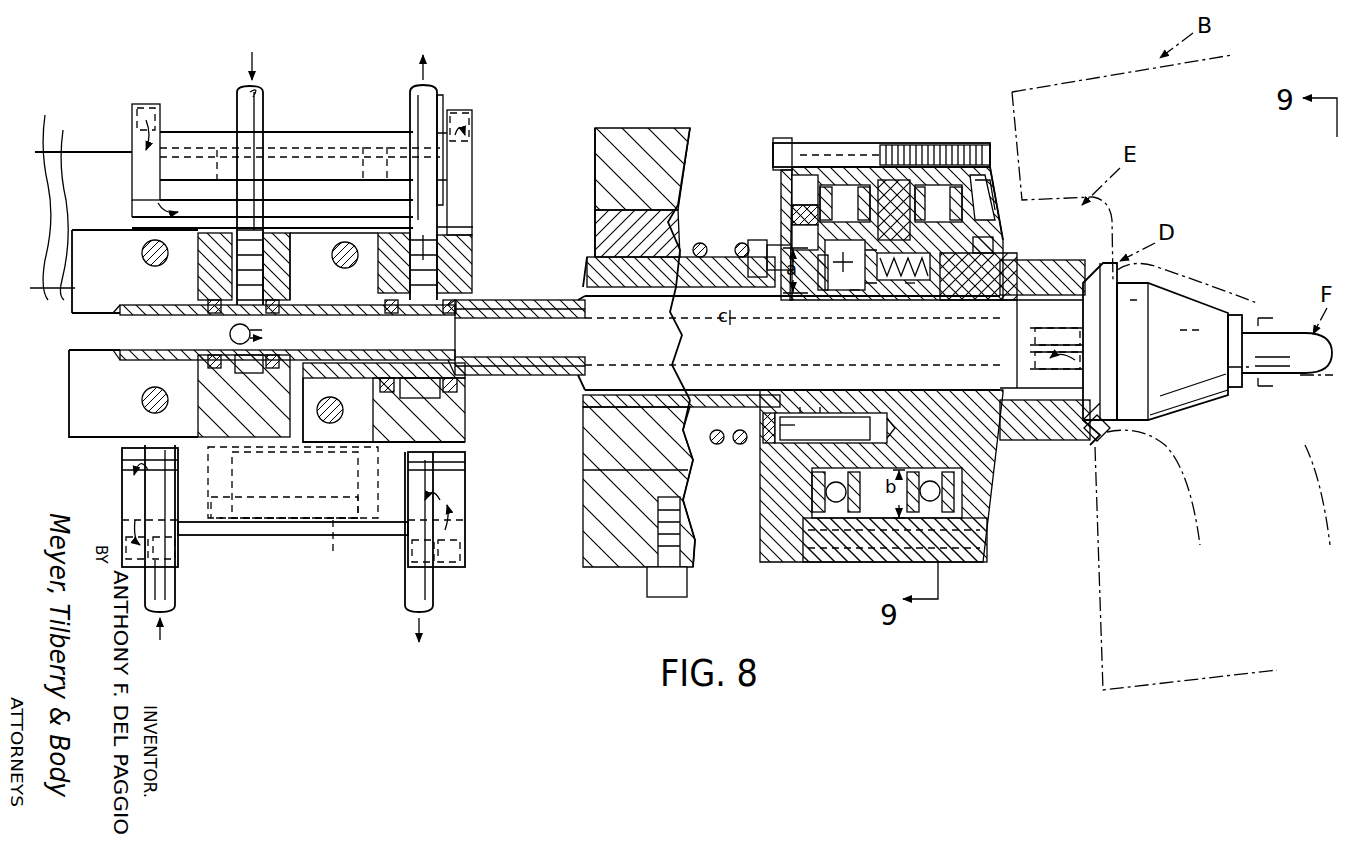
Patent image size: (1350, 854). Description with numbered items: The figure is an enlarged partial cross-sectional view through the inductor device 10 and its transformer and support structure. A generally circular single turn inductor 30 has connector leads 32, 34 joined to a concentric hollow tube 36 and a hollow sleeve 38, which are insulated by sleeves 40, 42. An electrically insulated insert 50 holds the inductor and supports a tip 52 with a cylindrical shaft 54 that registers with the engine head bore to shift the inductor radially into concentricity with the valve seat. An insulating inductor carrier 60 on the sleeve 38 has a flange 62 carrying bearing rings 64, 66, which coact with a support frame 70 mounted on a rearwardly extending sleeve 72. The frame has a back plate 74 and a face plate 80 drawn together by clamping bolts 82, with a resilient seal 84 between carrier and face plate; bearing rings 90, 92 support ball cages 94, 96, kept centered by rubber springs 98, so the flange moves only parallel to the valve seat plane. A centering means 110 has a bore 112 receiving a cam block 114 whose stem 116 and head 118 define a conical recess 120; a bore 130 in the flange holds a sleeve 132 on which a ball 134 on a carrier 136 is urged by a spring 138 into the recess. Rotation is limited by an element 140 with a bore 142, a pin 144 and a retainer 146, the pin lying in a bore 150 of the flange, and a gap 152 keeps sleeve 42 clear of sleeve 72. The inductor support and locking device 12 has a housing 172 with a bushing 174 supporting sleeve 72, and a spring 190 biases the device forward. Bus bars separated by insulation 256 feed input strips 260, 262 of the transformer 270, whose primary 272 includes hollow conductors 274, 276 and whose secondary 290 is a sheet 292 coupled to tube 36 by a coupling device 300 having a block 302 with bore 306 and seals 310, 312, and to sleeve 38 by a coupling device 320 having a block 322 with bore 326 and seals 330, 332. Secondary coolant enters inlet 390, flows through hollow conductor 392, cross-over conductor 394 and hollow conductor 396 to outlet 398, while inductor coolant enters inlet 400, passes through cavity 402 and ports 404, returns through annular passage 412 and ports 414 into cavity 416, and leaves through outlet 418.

The inductor device 10 is at (904, 127).
The inductor support and locking device 12 is at (647, 125).
The inductor 30 is at (1102, 433).
The connector lead 32 is at (1058, 330).
The connector lead 34 is at (1053, 362).
The hollow tube 36 is at (477, 303).
The hollow sleeve 38 is at (547, 300).
The insulating sleeve 40 is at (512, 325).
The insulating sleeve 42 is at (565, 295).
The electrically insulated insert 50 is at (1182, 305).
The tip 52 is at (1283, 333).
The cylindrical shaft 54 is at (1282, 316).
The inductor carrier 60 is at (1013, 263).
The flange 62 is at (897, 187).
The bearing ring 64 is at (857, 185).
The bearing ring 66 is at (930, 187).
The support frame 70 is at (794, 126).
The rearwardly extending sleeve 72 is at (602, 265).
The back plate 74 is at (797, 557).
The face plate 80 is at (983, 203).
The clamping bolts 82 is at (815, 150).
The seal 84 is at (993, 245).
The bearing ring 90 is at (822, 190).
The bearing ring 92 is at (985, 188).
The ball cage 94 is at (822, 545).
The ball cage 96 is at (938, 547).
The rubber springs 98 is at (847, 525).
The centering means 110 is at (868, 232).
The bore 112 is at (810, 246).
The cam block 114 is at (810, 218).
The stem 116 is at (772, 245).
The head 118 is at (828, 288).
The conical recess 120 is at (850, 300).
The bore 130 is at (935, 292).
The sleeve 132 is at (907, 285).
The ball 134 is at (850, 277).
The carrier 136 is at (905, 300).
The spring 138 is at (930, 265).
The element 140 is at (795, 466).
The bore 142 is at (805, 417).
The pin 144 is at (833, 425).
The retainer 146 is at (758, 445).
The bore 150 is at (880, 422).
The gap 152 is at (700, 287).
The housing 172 is at (675, 128).
The bushing 174 is at (682, 197).
The spring 190 is at (716, 445).
The insulation 256 is at (70, 150).
The input strip 260 is at (80, 165).
The input strip 262 is at (46, 130).
The transformer 270 is at (331, 132).
The primary 272 is at (333, 540).
The hollow conductor 274 is at (232, 487).
The hollow conductor 276 is at (357, 463).
The secondary 290 is at (183, 130).
The secondary sheet 292 is at (385, 537).
The coupling device 300 is at (115, 440).
The block 302 is at (220, 420).
The bore 306 is at (212, 298).
The seal 310 is at (208, 368).
The seal 312 is at (285, 300).
The coupling device 320 is at (473, 224).
The block 322 is at (470, 262).
The bore 326 is at (458, 300).
The seal 330 is at (380, 387).
The seal 332 is at (460, 388).
The inlet 390 is at (177, 593).
The hollow conductor 392 is at (152, 108).
The cross-over conductor 394 is at (348, 195).
The hollow conductor 396 is at (473, 120).
The outlet 398 is at (435, 592).
The inlet 400 is at (263, 95).
The cavity 402 is at (258, 270).
The ports 404 is at (230, 335).
The annular passage 412 is at (428, 375).
The ports 414 is at (403, 403).
The cavity 416 is at (455, 415).
The outlet 418 is at (437, 95).